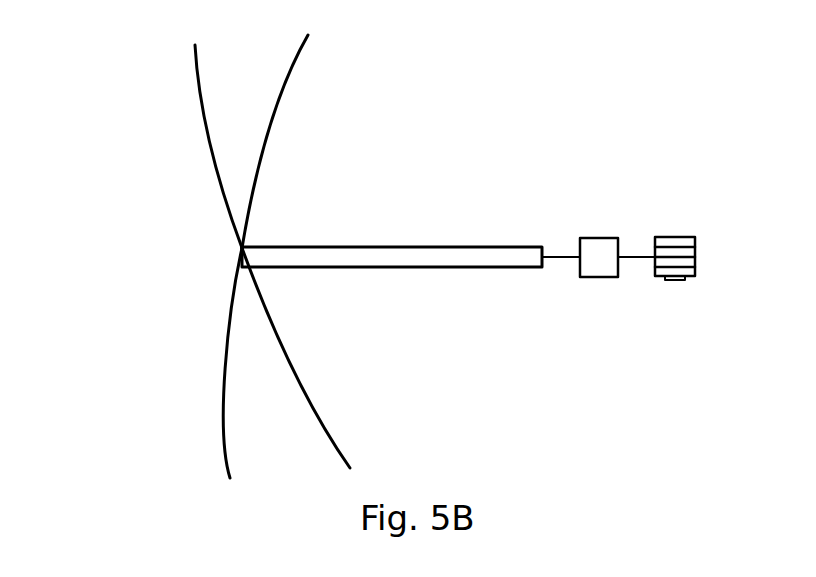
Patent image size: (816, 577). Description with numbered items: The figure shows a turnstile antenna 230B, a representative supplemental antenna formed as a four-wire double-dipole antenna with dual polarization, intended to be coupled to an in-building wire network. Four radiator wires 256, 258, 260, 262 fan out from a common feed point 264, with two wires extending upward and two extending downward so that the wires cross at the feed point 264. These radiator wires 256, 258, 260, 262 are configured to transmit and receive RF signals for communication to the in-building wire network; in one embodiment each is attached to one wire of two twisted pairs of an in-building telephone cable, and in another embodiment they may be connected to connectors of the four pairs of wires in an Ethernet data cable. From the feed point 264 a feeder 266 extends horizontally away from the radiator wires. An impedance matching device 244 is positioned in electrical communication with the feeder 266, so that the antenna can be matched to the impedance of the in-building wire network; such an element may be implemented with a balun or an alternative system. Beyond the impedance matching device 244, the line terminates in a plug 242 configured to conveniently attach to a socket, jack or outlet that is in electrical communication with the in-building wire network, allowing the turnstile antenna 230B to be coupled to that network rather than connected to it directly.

The turnstile antenna 230B is at (90, 228).
The plug 242 is at (683, 243).
The impedance matching device 244 is at (598, 238).
The radiator wire 256 is at (222, 400).
The radiator wire 258 is at (308, 403).
The radiator wire 260 is at (192, 83).
The radiator wire 262 is at (263, 152).
The feed point 264 is at (238, 250).
The feeder 266 is at (392, 246).